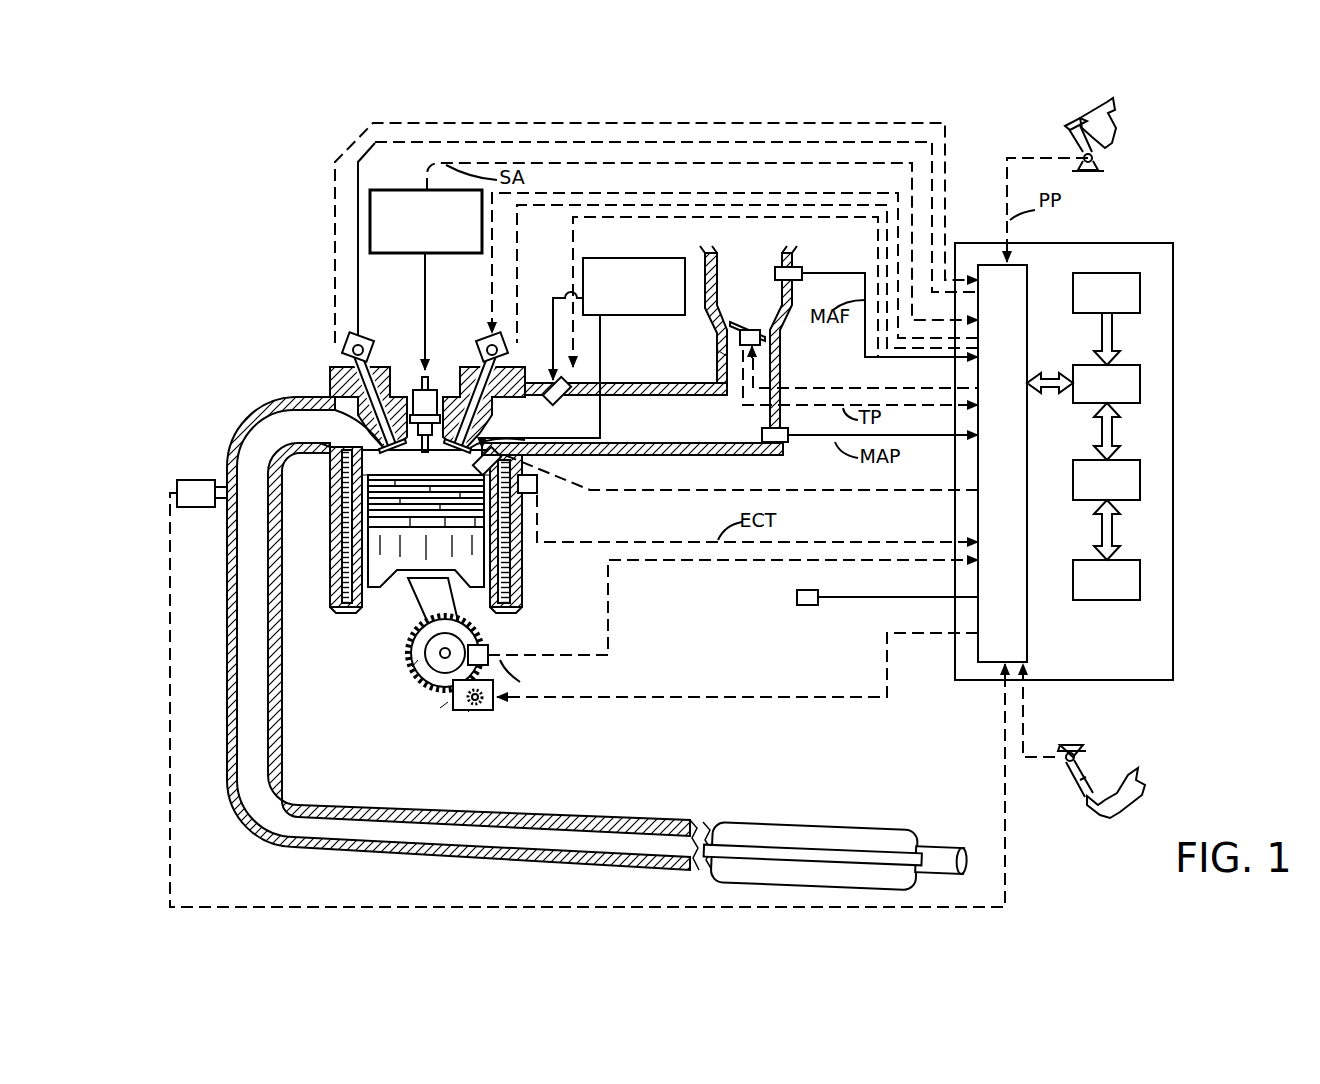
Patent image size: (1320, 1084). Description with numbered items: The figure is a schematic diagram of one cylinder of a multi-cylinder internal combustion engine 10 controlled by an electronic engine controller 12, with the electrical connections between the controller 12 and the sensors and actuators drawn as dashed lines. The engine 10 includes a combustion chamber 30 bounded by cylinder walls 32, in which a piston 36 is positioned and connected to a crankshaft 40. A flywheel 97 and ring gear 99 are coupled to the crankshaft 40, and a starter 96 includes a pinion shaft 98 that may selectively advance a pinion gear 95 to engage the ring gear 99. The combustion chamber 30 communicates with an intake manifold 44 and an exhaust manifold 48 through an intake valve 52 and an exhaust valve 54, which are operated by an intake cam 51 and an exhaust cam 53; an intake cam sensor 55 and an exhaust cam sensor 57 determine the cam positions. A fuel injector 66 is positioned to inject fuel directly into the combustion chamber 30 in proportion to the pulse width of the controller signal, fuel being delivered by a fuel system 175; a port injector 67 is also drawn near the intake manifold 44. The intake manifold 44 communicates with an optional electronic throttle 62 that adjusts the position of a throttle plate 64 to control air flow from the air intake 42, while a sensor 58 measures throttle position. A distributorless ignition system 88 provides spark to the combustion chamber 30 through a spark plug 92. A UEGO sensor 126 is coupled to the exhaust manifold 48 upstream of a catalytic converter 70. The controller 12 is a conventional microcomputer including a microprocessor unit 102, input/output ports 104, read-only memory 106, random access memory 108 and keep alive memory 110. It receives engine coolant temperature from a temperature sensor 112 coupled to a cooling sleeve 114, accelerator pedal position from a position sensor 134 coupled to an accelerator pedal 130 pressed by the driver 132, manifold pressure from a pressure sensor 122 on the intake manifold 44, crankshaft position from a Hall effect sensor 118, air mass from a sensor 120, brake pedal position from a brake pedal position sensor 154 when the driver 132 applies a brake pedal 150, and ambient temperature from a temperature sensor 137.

The internal combustion engine 10 is at (262, 320).
The electronic engine controller 12 is at (1165, 243).
The combustion chamber 30 is at (337, 562).
The cylinder walls 32 is at (373, 593).
The piston 36 is at (410, 580).
The crankshaft 40 is at (438, 685).
The air intake 42 is at (748, 337).
The intake manifold 44 is at (632, 419).
The exhaust manifold 48 is at (458, 633).
The intake cam 51 is at (478, 336).
The intake valve 52 is at (478, 434).
The exhaust cam 53 is at (372, 338).
The exhaust valve 54 is at (345, 403).
The intake cam sensor 55 is at (504, 353).
The exhaust cam sensor 57 is at (346, 353).
The throttle position sensor 58 is at (722, 356).
The electronic throttle 62 is at (770, 330).
The throttle plate 64 is at (728, 330).
The fuel injector 66 is at (515, 462).
The port fuel injector 67 is at (550, 387).
The catalytic converter 70 is at (722, 822).
The distributorless ignition system 88 is at (385, 190).
The spark plug 92 is at (432, 372).
The pinion gear 95 is at (483, 714).
The starter 96 is at (492, 706).
The flywheel 97 is at (416, 662).
The pinion shaft 98 is at (470, 712).
The ring gear 99 is at (446, 705).
The microprocessor unit 102 is at (1142, 390).
The input/output ports 104 is at (1028, 273).
The read-only memory 106 is at (1142, 290).
The random access memory 108 is at (1142, 480).
The keep alive memory 110 is at (1142, 580).
The temperature sensor 112 is at (538, 492).
The cooling sleeve 114 is at (522, 580).
The Hall effect sensor 118 is at (492, 647).
The air mass sensor 120 is at (800, 268).
The pressure sensor 122 is at (788, 446).
The UEGO sensor 126 is at (177, 483).
The accelerator pedal 130 is at (1070, 132).
The driver 132 is at (1120, 124).
The position sensor 134 is at (1100, 160).
The temperature sensor 137 is at (810, 606).
The brake pedal 150 is at (1095, 795).
The brake pedal position sensor 154 is at (1060, 757).
The fuel system 175 is at (635, 258).